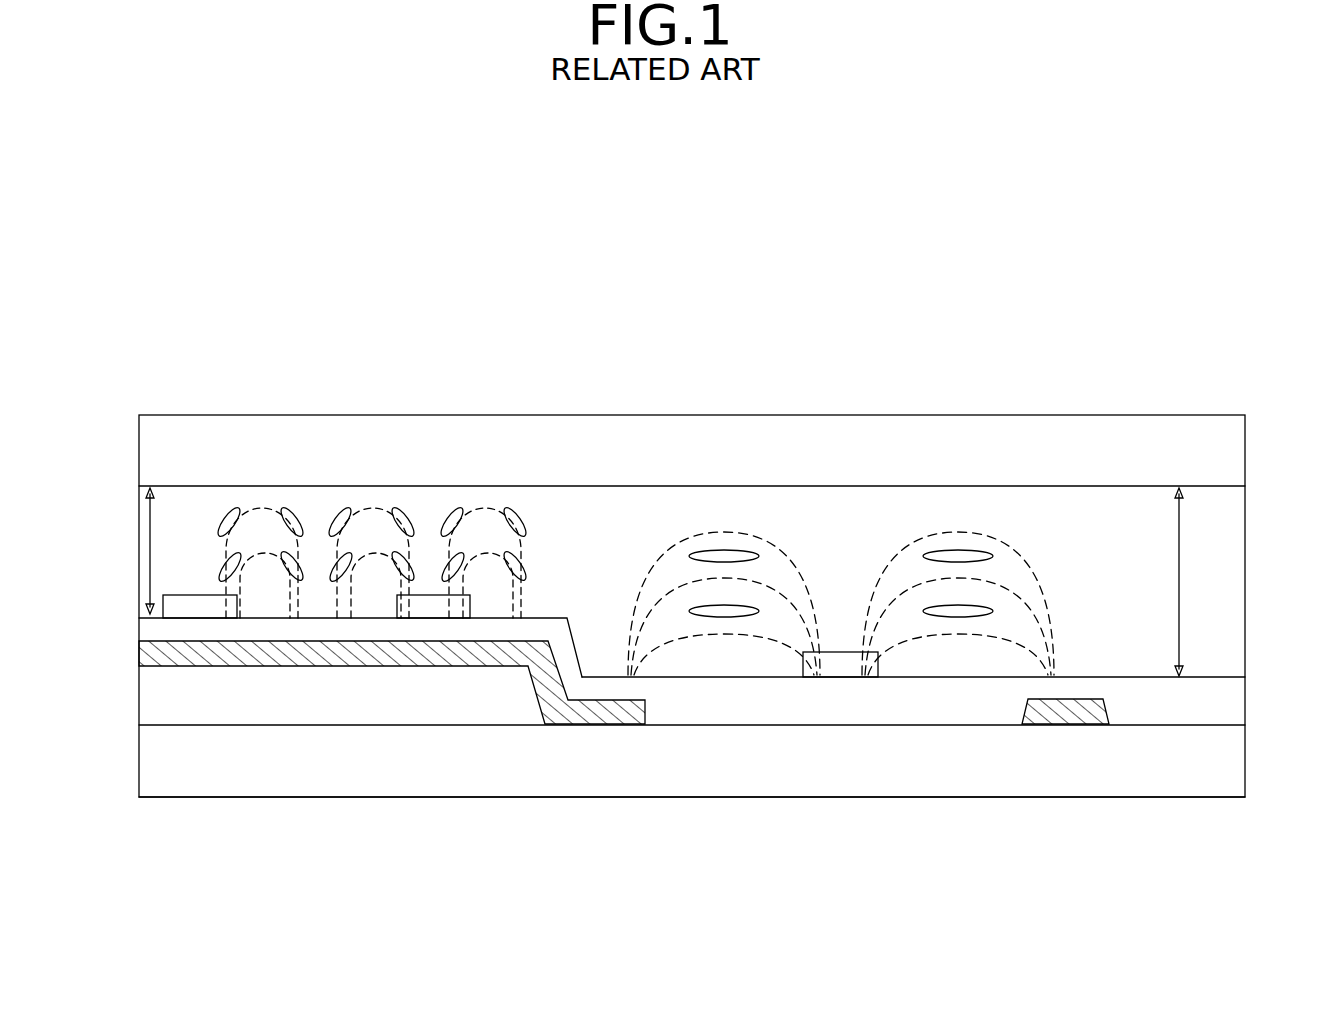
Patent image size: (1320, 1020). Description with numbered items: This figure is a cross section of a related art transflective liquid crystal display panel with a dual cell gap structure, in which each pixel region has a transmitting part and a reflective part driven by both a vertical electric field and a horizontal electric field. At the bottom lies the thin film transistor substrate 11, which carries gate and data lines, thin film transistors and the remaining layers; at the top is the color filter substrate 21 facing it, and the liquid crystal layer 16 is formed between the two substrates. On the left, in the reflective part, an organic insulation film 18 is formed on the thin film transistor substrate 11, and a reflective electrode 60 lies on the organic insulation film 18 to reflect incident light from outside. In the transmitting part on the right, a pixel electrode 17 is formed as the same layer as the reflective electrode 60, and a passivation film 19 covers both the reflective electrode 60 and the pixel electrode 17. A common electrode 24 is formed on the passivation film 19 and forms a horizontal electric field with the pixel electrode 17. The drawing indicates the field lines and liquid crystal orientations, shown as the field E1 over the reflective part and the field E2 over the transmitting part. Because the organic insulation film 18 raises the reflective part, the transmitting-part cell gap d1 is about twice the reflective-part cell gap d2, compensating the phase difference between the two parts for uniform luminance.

The color filter substrate 21 is at (1240, 458).
The liquid crystal layer 16 is at (1240, 603).
The passivation film 19 is at (1240, 711).
The thin film transistor substrate 11 is at (1240, 760).
The organic insulation film 18 is at (150, 700).
The reflective electrode 60 is at (140, 653).
The common electrode 24 is at (837, 662).
The pixel electrode 17 is at (1068, 722).
The electric field in first region E1 is at (377, 505).
The electric field in second region E2 is at (958, 530).
The first cell gap d1 is at (1162, 582).
The second cell gap d2 is at (150, 549).